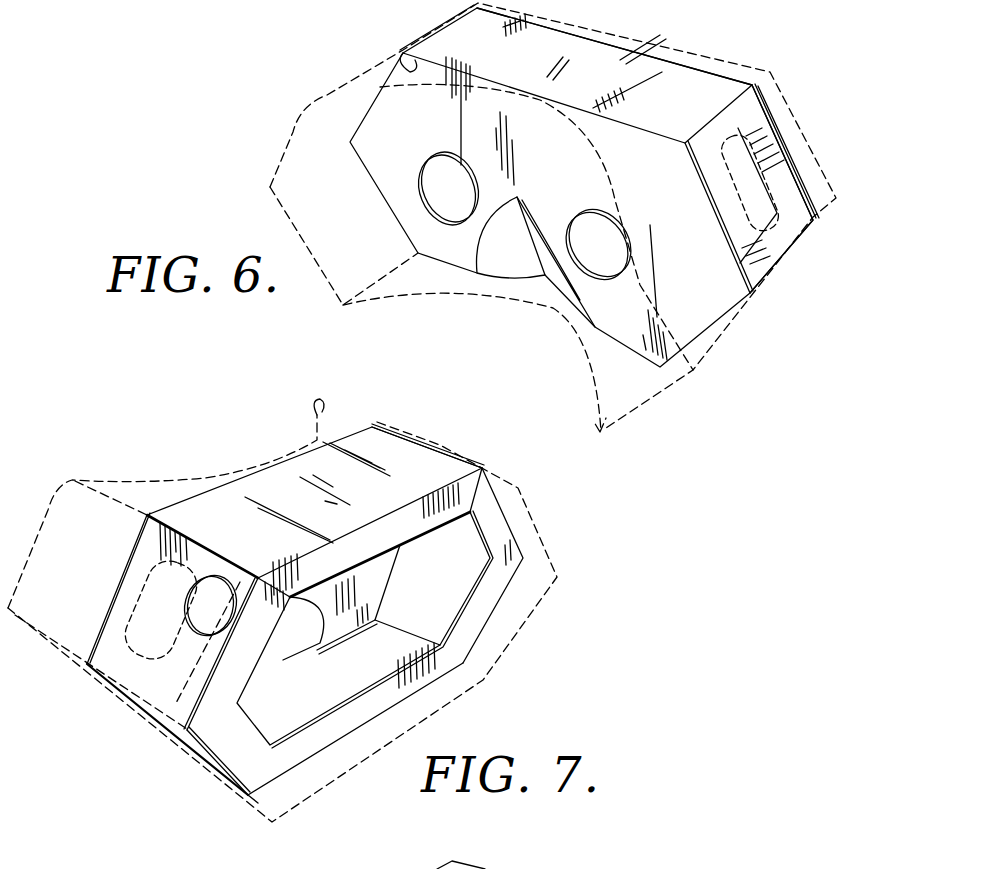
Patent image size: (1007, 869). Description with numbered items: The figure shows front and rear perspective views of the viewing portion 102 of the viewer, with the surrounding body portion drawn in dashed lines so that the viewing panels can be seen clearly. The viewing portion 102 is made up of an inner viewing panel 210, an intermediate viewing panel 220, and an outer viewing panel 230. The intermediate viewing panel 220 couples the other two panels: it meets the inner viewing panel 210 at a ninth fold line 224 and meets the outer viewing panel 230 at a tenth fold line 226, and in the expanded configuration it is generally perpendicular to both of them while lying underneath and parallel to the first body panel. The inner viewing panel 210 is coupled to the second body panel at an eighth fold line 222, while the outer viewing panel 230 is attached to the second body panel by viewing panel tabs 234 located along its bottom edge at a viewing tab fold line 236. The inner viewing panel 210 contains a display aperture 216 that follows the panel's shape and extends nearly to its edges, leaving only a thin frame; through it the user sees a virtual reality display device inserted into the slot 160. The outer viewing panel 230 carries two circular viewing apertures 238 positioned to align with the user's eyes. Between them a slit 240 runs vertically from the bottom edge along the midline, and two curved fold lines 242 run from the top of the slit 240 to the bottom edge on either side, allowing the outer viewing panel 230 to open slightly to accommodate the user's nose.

In FIG. 6, the viewing portion 102 is at (793, 62).
In FIG. 7, the viewing portion 102 is at (295, 423).
In FIG. 6, the slot 160 is at (800, 152).
In FIG. 6, the inner viewing panel 210 is at (778, 240).
In FIG. 7, the inner viewing panel 210 is at (375, 527).
In FIG. 6, the display aperture 216 is at (727, 128).
In FIG. 7, the display aperture 216 is at (462, 576).
In FIG. 6, the intermediate viewing panel 220 is at (620, 84).
In FIG. 7, the intermediate viewing panel 220 is at (244, 530).
In FIG. 7, the eighth fold line 222 is at (285, 780).
In FIG. 6, the ninth fold line 224 is at (683, 62).
In FIG. 7, the ninth fold line 224 is at (458, 481).
In FIG. 6, the tenth fold line 226 is at (426, 67).
In FIG. 7, the tenth fold line 226 is at (357, 425).
In FIG. 6, the outer viewing panel 230 is at (569, 157).
In FIG. 7, the outer viewing panel 230 is at (382, 568).
In FIG. 7, the viewing panel tab 234 is at (372, 657).
In FIG. 7, the viewing tab fold line 236 is at (365, 631).
In FIG. 6, the viewing aperture 238 is at (438, 162).
In FIG. 6, the slit 240 is at (548, 282).
In FIG. 6, the curved fold line 242 is at (474, 258).